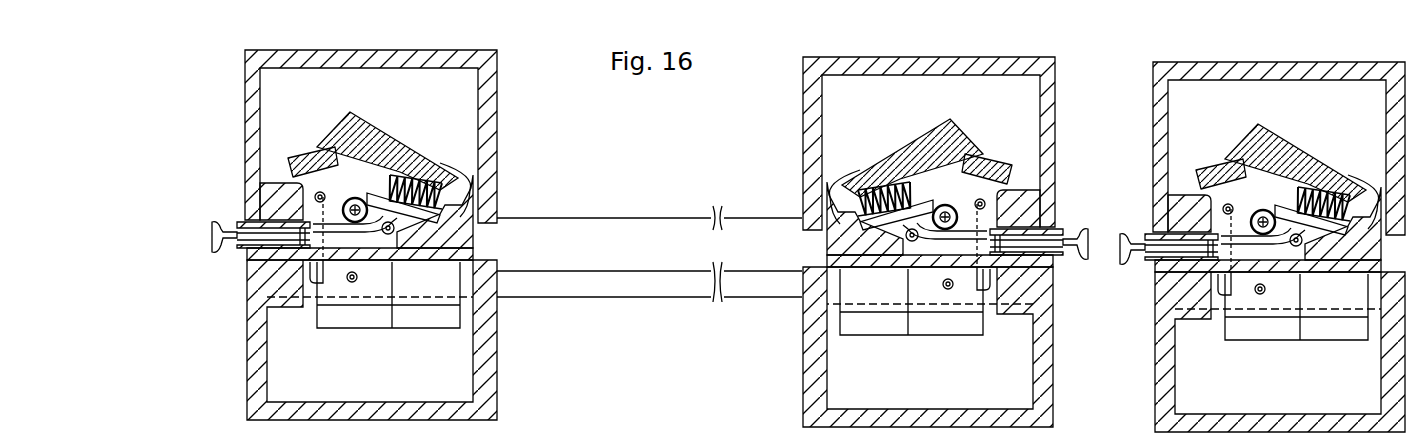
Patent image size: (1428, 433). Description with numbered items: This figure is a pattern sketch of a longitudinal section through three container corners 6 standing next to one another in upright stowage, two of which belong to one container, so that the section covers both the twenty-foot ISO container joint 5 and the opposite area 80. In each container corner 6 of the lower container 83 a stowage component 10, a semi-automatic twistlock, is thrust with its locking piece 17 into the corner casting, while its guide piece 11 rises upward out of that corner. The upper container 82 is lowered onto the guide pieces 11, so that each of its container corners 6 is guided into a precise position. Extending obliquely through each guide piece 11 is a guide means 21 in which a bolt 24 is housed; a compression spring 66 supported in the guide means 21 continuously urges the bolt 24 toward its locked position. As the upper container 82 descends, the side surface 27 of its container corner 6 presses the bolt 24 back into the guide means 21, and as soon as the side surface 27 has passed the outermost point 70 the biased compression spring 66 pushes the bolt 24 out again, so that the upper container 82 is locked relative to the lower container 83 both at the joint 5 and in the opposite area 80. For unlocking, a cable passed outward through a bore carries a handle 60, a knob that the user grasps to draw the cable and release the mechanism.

The 20-foot ISO container joint 5 is at (1108, 108).
The container corner 6 is at (360, 57).
The stowage component 10 is at (325, 125).
The guide piece 11 is at (377, 132).
The locking piece 17 is at (352, 318).
The guide means 21 is at (433, 183).
The bolt 24 is at (298, 153).
The side surface 27 is at (268, 207).
The handle 60 is at (213, 250).
The compression spring 66 is at (422, 175).
The outermost point 70 is at (290, 167).
The opposite area 80 is at (188, 96).
The upper container 82 is at (642, 193).
The lower container 83 is at (647, 380).